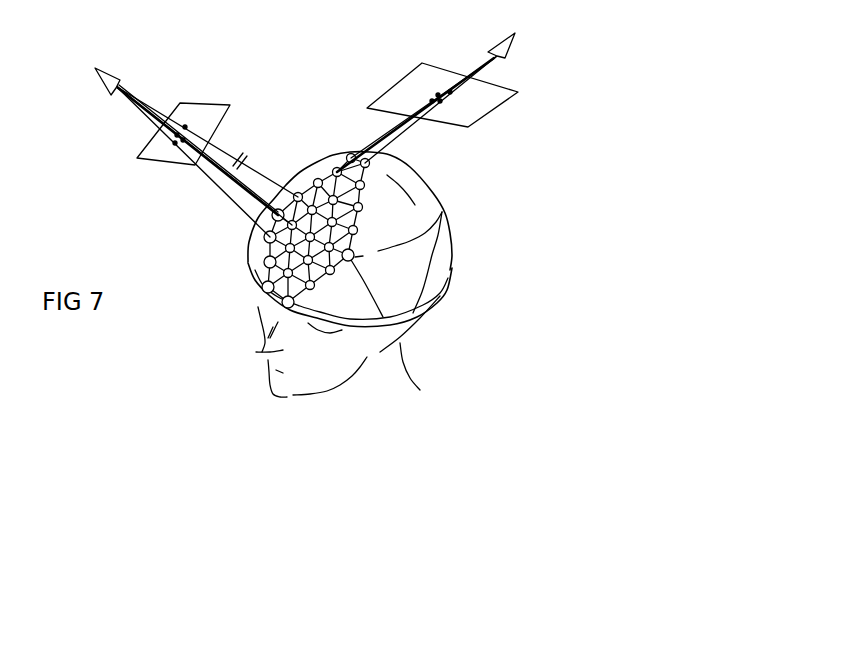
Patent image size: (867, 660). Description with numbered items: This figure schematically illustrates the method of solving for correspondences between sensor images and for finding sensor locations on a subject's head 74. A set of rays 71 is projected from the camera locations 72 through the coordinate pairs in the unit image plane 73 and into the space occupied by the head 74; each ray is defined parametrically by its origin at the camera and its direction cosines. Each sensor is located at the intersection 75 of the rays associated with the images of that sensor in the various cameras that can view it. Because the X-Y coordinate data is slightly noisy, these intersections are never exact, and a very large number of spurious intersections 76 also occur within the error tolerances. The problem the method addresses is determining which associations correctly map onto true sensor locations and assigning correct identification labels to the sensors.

The rays 71 is at (241, 160).
The camera locations 72 is at (108, 72).
The unit image plane 73 is at (206, 102).
The head 74 is at (250, 282).
The intersection 75 is at (268, 236).
The spurious intersections 76 is at (452, 247).